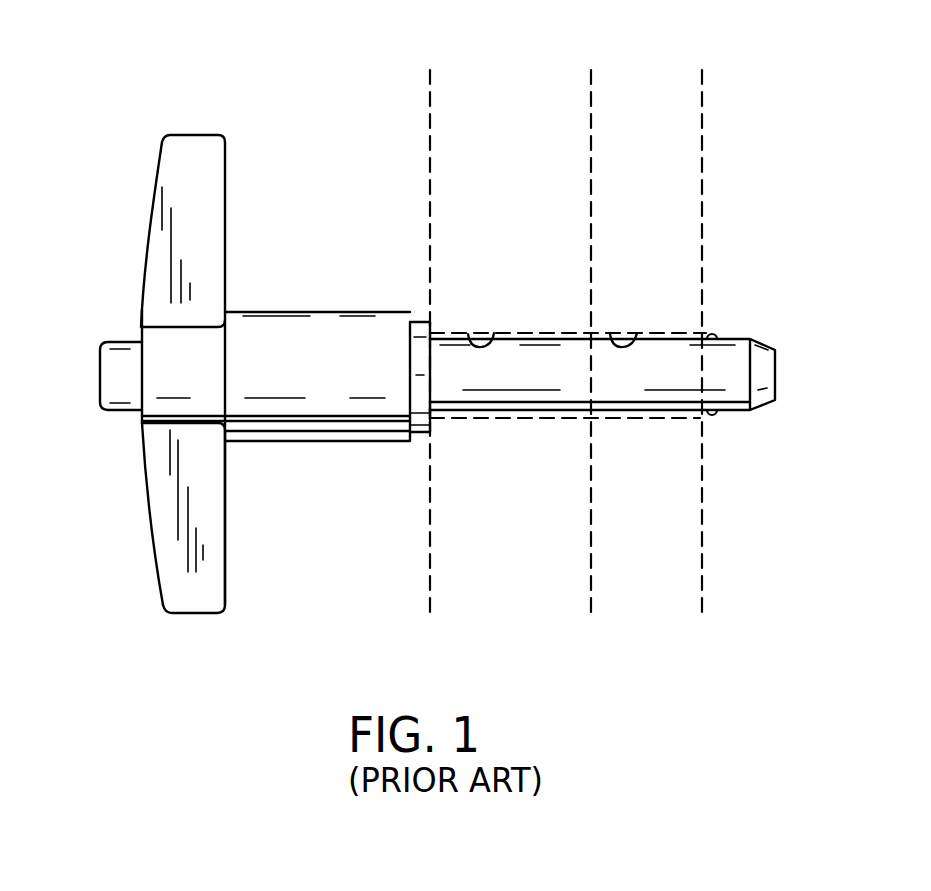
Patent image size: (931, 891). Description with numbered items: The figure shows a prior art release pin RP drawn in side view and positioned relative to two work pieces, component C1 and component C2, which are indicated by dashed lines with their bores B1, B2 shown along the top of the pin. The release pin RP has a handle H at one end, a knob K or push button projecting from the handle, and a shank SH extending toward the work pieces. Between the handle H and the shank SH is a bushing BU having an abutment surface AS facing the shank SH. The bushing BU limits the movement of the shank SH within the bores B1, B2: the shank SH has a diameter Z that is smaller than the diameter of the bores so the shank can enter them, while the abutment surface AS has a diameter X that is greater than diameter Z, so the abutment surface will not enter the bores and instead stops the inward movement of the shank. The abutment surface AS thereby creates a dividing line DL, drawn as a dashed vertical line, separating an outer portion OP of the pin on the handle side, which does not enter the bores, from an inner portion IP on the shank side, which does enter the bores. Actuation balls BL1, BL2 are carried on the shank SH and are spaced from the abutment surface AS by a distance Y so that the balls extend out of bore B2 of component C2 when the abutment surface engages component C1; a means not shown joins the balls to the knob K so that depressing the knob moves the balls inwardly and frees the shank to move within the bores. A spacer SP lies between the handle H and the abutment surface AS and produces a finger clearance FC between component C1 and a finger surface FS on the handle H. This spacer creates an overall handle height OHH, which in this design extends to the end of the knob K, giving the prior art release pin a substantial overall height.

The release pin RP is at (136, 618).
The outer portion OP is at (430, 62).
The inner portion IP is at (772, 62).
The overall handle height OHH is at (430, 99).
The finger clearance FC is at (430, 172).
The distance Y is at (702, 124).
The dividing line DL is at (430, 575).
The component C1 is at (582, 194).
The component C2 is at (692, 220).
The handle H is at (201, 596).
The finger surface FS is at (226, 540).
The knob K is at (126, 398).
The spacer SP is at (276, 424).
The bushing BU is at (412, 360).
The diameter X is at (418, 444).
The abutment surface AS is at (433, 420).
The shank SH is at (629, 395).
The diameter Z is at (553, 430).
The bore B1 is at (495, 328).
The bore B2 is at (641, 326).
The actuation ball BL1 is at (718, 331).
The actuation ball BL2 is at (718, 418).